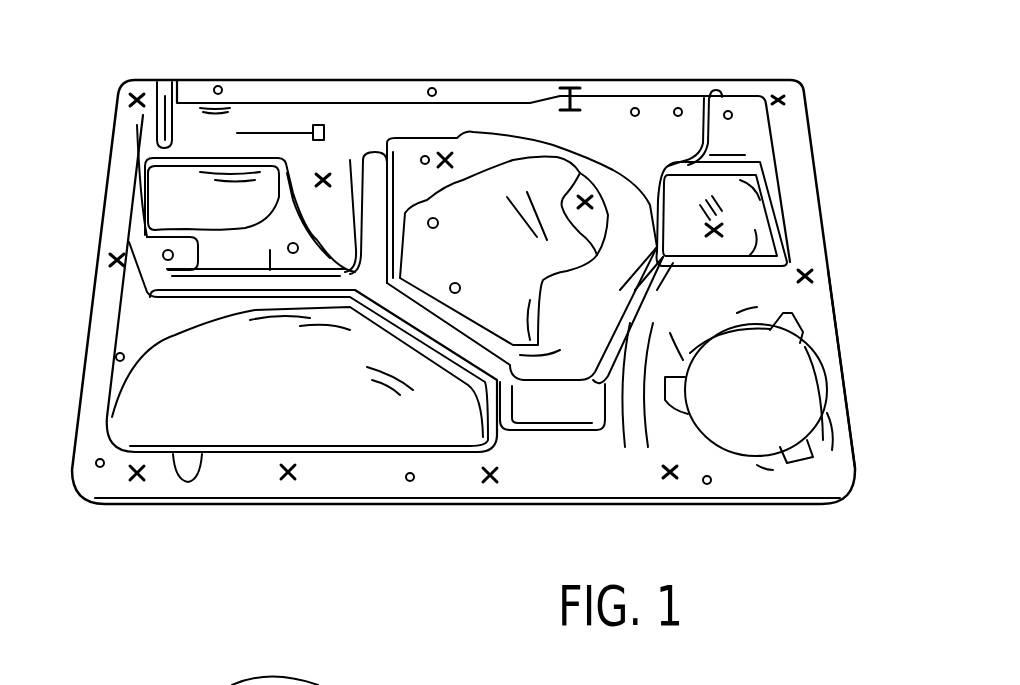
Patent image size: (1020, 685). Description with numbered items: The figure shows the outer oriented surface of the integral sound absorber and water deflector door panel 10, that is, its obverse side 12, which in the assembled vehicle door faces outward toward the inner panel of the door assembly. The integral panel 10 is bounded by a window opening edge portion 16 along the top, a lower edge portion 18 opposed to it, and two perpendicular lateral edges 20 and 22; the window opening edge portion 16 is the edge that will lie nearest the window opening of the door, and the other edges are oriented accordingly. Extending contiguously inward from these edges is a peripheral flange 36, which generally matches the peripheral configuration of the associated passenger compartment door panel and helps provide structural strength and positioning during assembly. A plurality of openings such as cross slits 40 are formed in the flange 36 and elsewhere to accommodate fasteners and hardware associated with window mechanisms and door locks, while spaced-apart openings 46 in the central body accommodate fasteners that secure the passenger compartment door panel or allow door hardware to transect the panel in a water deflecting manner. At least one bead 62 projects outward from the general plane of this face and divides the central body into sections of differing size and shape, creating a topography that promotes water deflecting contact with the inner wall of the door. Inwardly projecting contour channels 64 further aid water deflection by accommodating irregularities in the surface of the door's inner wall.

The integral sound absorber and water deflector door panel 10 is at (668, 22).
The obverse side 12 is at (793, 150).
The window opening edge portion 16 is at (332, 78).
The lower edge portion 18 is at (300, 500).
The lateral edge 20 is at (108, 195).
The lateral edge 22 is at (830, 313).
The flange 36 is at (430, 490).
The cross slit 40 is at (672, 478).
The spaced-apart opening 46 is at (101, 468).
The bead 62 is at (122, 328).
The inwardly projecting contour channel 64 is at (558, 407).